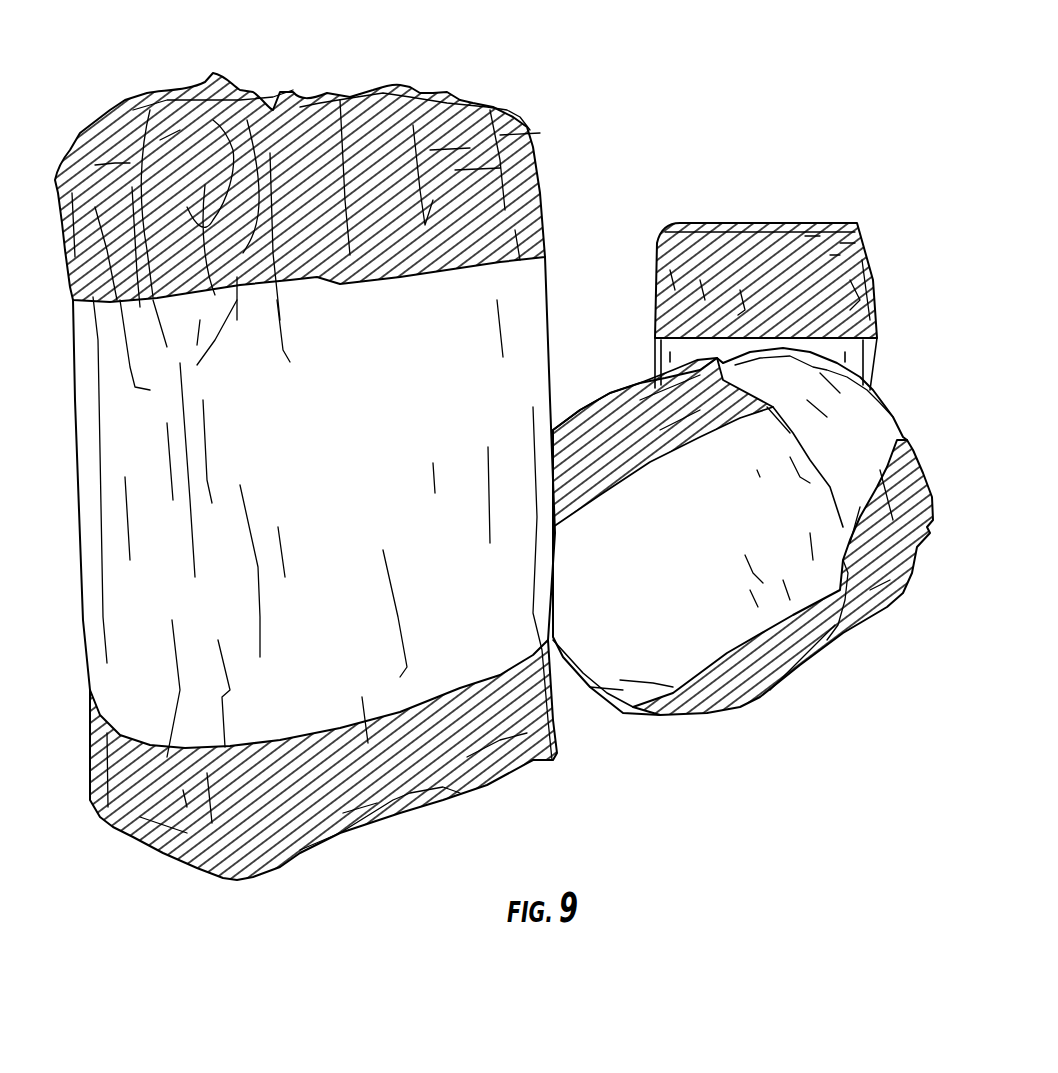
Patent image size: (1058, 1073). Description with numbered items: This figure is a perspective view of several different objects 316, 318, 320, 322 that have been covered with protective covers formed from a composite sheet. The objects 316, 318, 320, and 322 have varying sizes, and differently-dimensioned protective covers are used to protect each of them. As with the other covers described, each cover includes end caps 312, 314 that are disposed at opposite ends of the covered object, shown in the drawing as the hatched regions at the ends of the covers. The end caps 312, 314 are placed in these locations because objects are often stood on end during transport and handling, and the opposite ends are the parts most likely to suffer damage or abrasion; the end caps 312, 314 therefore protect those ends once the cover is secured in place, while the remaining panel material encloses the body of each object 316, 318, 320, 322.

The end cap 312 is at (243, 127).
The end cap 314 is at (440, 770).
The object 316 is at (297, 710).
The object 318 is at (783, 580).
The object 320 is at (867, 430).
The object 322 is at (857, 362).